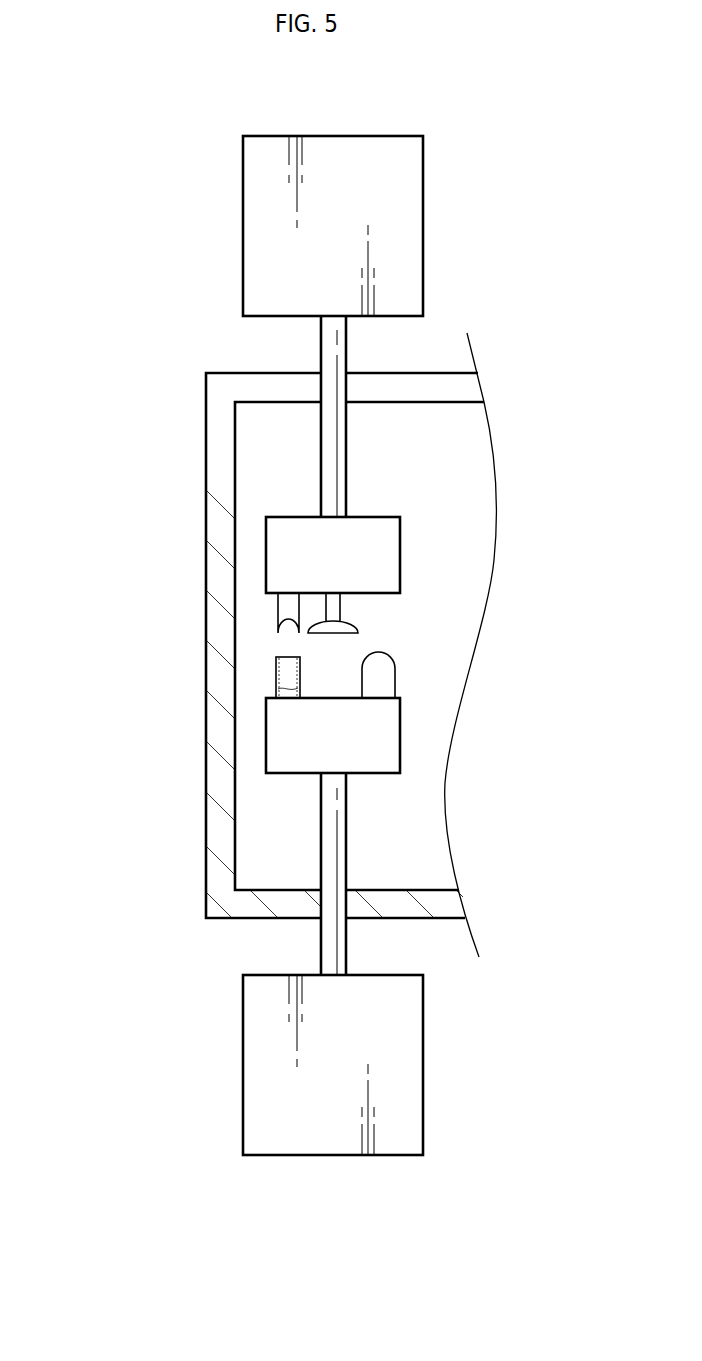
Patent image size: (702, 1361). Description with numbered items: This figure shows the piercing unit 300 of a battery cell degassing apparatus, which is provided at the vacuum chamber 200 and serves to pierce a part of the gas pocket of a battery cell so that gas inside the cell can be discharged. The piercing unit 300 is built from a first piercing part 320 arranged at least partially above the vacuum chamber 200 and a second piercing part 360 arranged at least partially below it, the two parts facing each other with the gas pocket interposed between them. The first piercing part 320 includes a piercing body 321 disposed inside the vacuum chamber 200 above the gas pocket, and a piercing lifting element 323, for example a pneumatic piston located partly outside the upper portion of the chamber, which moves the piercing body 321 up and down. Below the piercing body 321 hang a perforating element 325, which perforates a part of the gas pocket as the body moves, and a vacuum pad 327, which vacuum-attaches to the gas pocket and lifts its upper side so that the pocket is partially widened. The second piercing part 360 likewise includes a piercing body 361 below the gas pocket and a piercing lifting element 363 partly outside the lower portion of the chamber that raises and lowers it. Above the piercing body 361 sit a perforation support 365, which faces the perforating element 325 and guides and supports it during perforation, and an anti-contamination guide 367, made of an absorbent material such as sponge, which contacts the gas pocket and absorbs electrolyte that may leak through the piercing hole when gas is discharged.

The piercing unit 300 is at (112, 143).
The vacuum chamber 200 is at (206, 399).
The first piercing part 320 is at (216, 161).
The piercing lifting element 323 is at (423, 172).
The piercing body 321 is at (277, 553).
The perforating element 325 is at (278, 607).
The vacuum pad 327 is at (340, 611).
The perforation support 365 is at (277, 674).
The anti-contamination guide 367 is at (380, 680).
The piercing body 361 is at (277, 743).
The second piercing part 360 is at (216, 1131).
The piercing lifting element 363 is at (423, 1046).